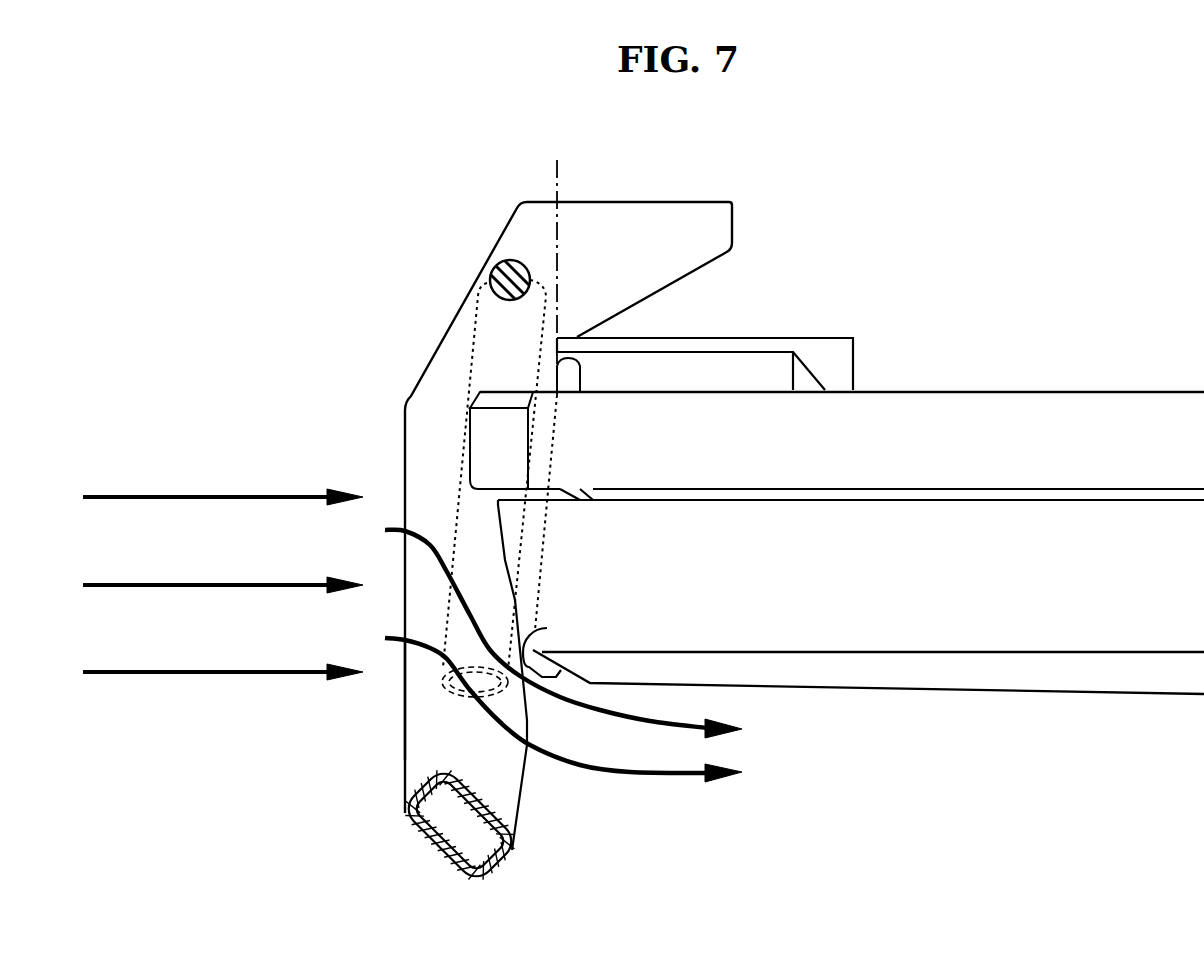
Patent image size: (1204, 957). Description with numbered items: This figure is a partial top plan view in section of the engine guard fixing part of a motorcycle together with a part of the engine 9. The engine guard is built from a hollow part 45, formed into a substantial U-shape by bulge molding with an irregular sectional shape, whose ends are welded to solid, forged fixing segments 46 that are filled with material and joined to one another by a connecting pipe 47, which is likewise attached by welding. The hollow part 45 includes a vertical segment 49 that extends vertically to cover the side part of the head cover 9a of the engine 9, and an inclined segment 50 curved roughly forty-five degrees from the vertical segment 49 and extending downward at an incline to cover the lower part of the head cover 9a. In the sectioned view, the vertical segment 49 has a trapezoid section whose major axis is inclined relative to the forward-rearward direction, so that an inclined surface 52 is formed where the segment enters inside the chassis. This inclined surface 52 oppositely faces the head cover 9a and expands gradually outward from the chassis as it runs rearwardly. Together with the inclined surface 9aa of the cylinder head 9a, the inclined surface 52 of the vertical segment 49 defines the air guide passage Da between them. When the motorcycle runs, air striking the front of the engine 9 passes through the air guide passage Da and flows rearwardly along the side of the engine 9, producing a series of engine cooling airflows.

The engine 9 is at (1070, 395).
The head cover 9a is at (978, 617).
The inclined surface 9aa is at (547, 628).
The hollow part 45 is at (412, 745).
The fixing segment 46 is at (662, 210).
The connecting pipe 47 is at (497, 288).
The vertical segment 49 is at (418, 847).
The inclined segment 50 is at (412, 695).
The inclined surface 52 is at (490, 802).
The air guide passage Da is at (563, 656).